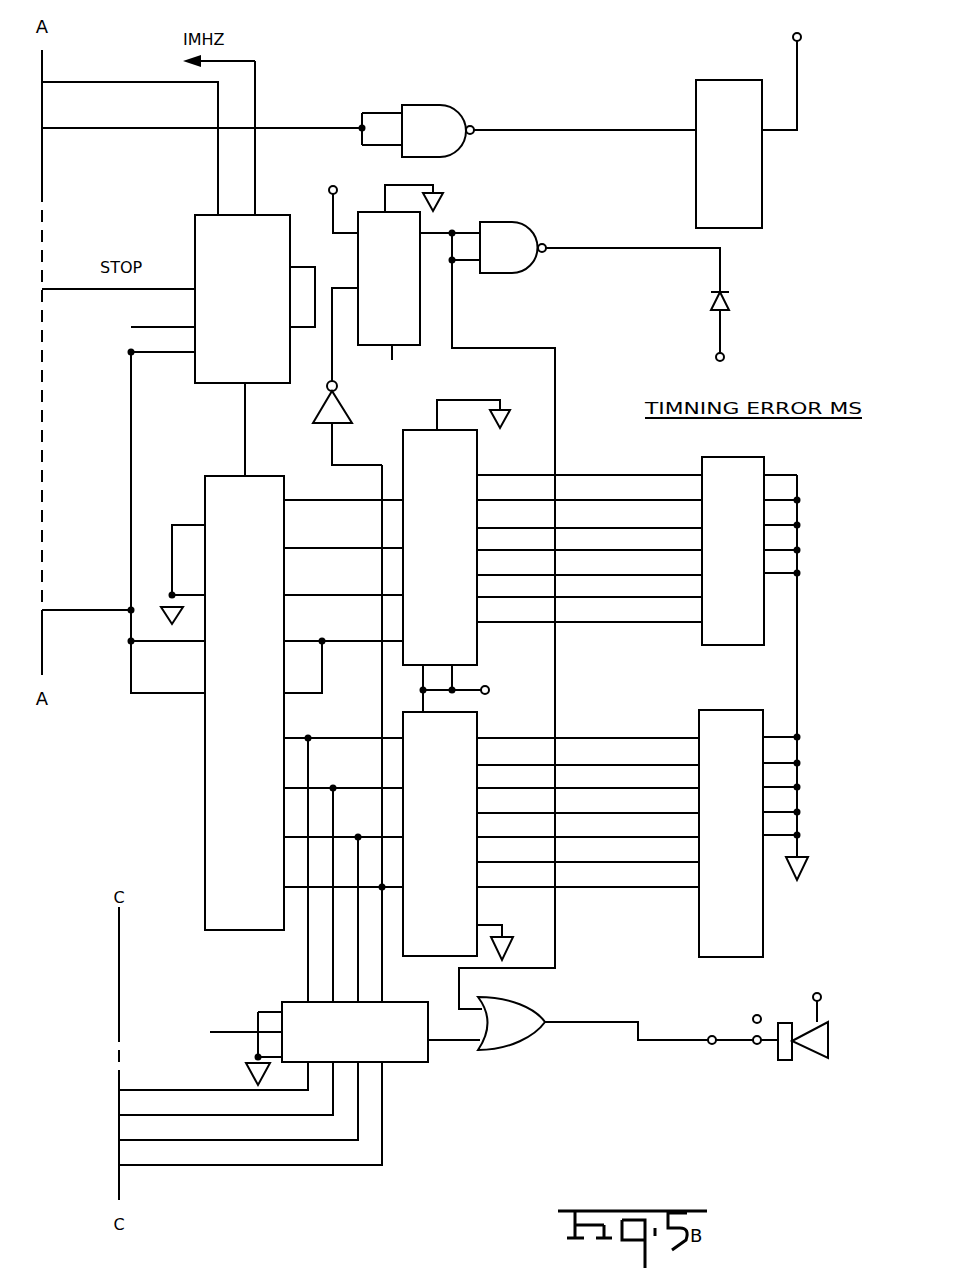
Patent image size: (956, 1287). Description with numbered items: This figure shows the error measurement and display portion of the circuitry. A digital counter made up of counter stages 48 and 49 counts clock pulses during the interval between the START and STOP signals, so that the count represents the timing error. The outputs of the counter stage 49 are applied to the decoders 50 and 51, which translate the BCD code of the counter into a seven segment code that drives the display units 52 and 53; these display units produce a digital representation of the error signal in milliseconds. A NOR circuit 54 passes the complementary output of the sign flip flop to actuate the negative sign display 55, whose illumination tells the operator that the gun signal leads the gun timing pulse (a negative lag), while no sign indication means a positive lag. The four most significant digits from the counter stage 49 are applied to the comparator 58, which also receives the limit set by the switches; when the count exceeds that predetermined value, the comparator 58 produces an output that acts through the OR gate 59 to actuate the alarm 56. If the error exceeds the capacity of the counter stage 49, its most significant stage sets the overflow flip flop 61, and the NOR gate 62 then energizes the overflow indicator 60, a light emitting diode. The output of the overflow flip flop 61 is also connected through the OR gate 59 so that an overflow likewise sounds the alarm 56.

The counter stage 48 is at (213, 383).
The counter stage 49 is at (205, 493).
The decoder 50 is at (477, 462).
The decoder 51 is at (477, 730).
The display unit 52 is at (762, 457).
The display unit 53 is at (717, 710).
The NOR circuit 54 is at (453, 110).
The negative sign display 55 is at (763, 197).
The alarm 56 is at (829, 1034).
The comparator 58 is at (282, 1002).
The OR gate 59 is at (533, 1040).
The overflow indicator 60 is at (730, 298).
The overflow flip flop 61 is at (420, 337).
The NOR gate 62 is at (530, 222).